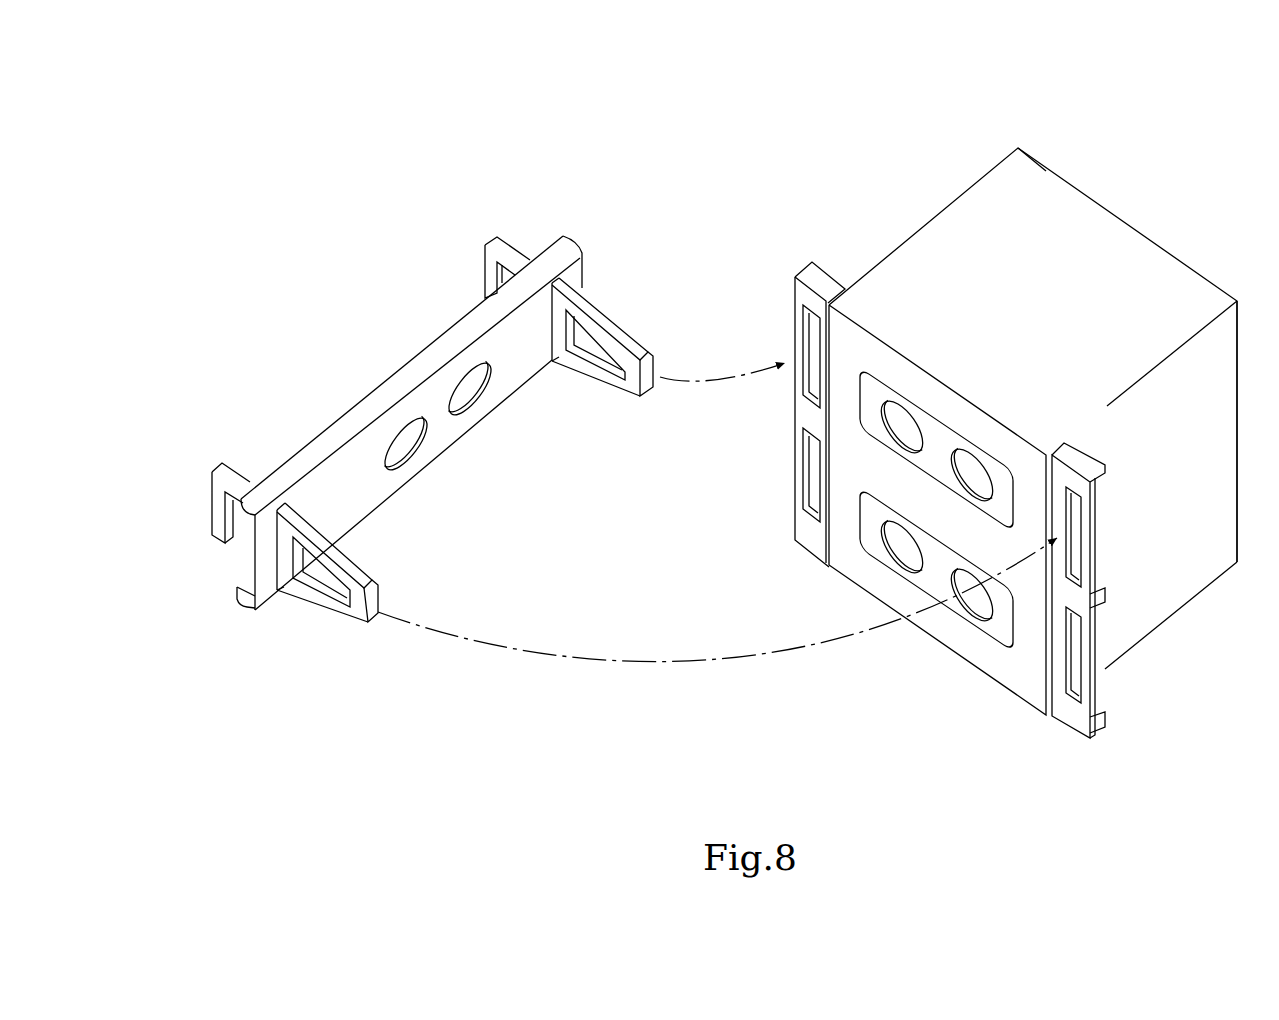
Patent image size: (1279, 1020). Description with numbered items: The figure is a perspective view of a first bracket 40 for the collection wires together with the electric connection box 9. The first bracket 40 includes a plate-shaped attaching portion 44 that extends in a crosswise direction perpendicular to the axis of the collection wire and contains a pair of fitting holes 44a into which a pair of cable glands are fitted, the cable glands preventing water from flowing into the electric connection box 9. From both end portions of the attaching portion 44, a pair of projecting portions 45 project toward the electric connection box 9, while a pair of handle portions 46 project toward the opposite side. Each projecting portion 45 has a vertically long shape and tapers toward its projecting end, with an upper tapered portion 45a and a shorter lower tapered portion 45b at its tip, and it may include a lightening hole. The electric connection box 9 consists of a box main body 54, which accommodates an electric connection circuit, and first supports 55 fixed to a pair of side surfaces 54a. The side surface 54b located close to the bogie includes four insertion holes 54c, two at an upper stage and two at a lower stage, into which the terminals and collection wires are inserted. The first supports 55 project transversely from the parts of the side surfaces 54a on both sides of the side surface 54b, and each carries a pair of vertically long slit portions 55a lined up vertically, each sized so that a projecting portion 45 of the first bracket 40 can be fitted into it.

The electric connection box 9 is at (998, 160).
The first bracket 40 is at (368, 395).
The attaching portion 44 is at (503, 343).
The fitting holes 44a is at (408, 449).
The projecting portion 45 is at (613, 304).
The upper tapered portion 45a is at (645, 348).
The lower tapered portion 45b is at (606, 398).
The handle portion 46 is at (522, 236).
The box main body 54 is at (943, 227).
The side surfaces 54a is at (1160, 602).
The side surface 54b is at (950, 645).
The insertion holes 54c is at (977, 468).
The first support 55 is at (796, 549).
The slit portions 55a is at (813, 374).